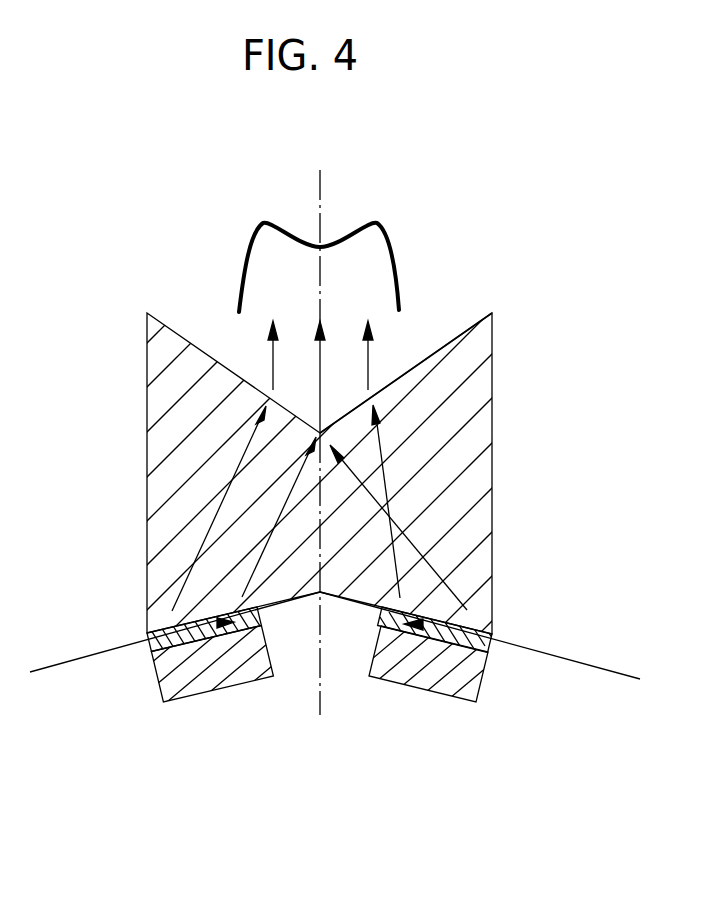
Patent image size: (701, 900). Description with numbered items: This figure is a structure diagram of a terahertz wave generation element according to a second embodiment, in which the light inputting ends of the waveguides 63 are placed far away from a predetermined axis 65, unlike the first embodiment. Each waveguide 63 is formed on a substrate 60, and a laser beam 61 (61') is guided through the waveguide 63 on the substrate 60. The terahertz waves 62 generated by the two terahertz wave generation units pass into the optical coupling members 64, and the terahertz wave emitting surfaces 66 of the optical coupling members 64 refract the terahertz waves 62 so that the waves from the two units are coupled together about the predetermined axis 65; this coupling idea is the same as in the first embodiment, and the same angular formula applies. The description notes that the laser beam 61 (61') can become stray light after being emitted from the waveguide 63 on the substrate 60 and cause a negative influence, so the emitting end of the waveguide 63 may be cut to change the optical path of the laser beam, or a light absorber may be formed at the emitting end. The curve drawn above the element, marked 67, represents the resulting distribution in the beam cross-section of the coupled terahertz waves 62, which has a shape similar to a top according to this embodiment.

The substrate 60 is at (418, 688).
The laser beam 61 is at (480, 674).
The laser beam 61' is at (175, 671).
The terahertz waves 62 is at (272, 368).
The waveguide 63 is at (493, 636).
The optical coupling member 64 is at (478, 466).
The predetermined axis 65 is at (318, 200).
The terahertz wave emitting surface 66 is at (440, 343).
The light intensity distribution curve 67 is at (388, 233).